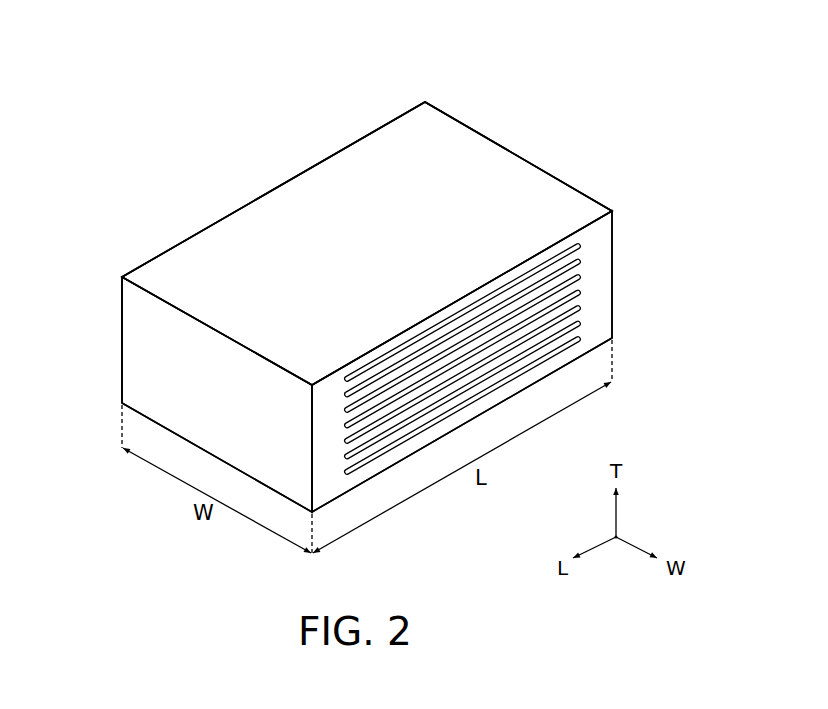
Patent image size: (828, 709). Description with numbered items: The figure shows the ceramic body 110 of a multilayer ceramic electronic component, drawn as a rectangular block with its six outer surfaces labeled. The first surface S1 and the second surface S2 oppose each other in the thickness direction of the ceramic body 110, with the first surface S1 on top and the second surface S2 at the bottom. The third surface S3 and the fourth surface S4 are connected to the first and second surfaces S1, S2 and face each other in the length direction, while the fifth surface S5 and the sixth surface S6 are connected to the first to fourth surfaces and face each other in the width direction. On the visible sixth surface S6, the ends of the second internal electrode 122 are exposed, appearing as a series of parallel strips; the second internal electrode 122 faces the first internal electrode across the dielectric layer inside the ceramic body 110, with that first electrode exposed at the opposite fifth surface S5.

The ceramic body 110 is at (447, 128).
The second internal electrode 122 is at (581, 260).
The first surface S1 is at (243, 246).
The second surface S2 is at (192, 421).
The third surface S3 is at (154, 340).
The fourth surface S4 is at (501, 177).
The fifth surface S5 is at (364, 171).
The sixth surface S6 is at (593, 284).